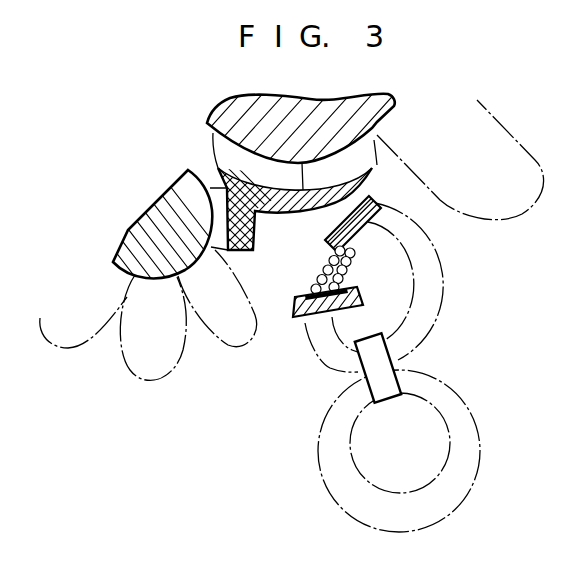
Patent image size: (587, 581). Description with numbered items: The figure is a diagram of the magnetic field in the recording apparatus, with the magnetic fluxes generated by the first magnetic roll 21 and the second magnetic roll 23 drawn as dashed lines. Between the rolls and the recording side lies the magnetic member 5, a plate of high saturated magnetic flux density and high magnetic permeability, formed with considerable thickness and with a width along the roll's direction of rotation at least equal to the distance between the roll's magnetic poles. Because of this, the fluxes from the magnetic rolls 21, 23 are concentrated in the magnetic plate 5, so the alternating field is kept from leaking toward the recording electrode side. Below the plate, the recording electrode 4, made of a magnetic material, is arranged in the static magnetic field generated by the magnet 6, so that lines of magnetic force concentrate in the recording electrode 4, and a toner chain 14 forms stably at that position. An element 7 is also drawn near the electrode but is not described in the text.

The first magnetic roll 21 is at (384, 103).
The second magnetic roll 23 is at (158, 210).
The magnetic member 5 is at (293, 212).
The recording electrode 4 is at (360, 226).
The toner chain 14 is at (317, 283).
The armature plate 7 is at (287, 291).
The magnet 6 is at (395, 371).